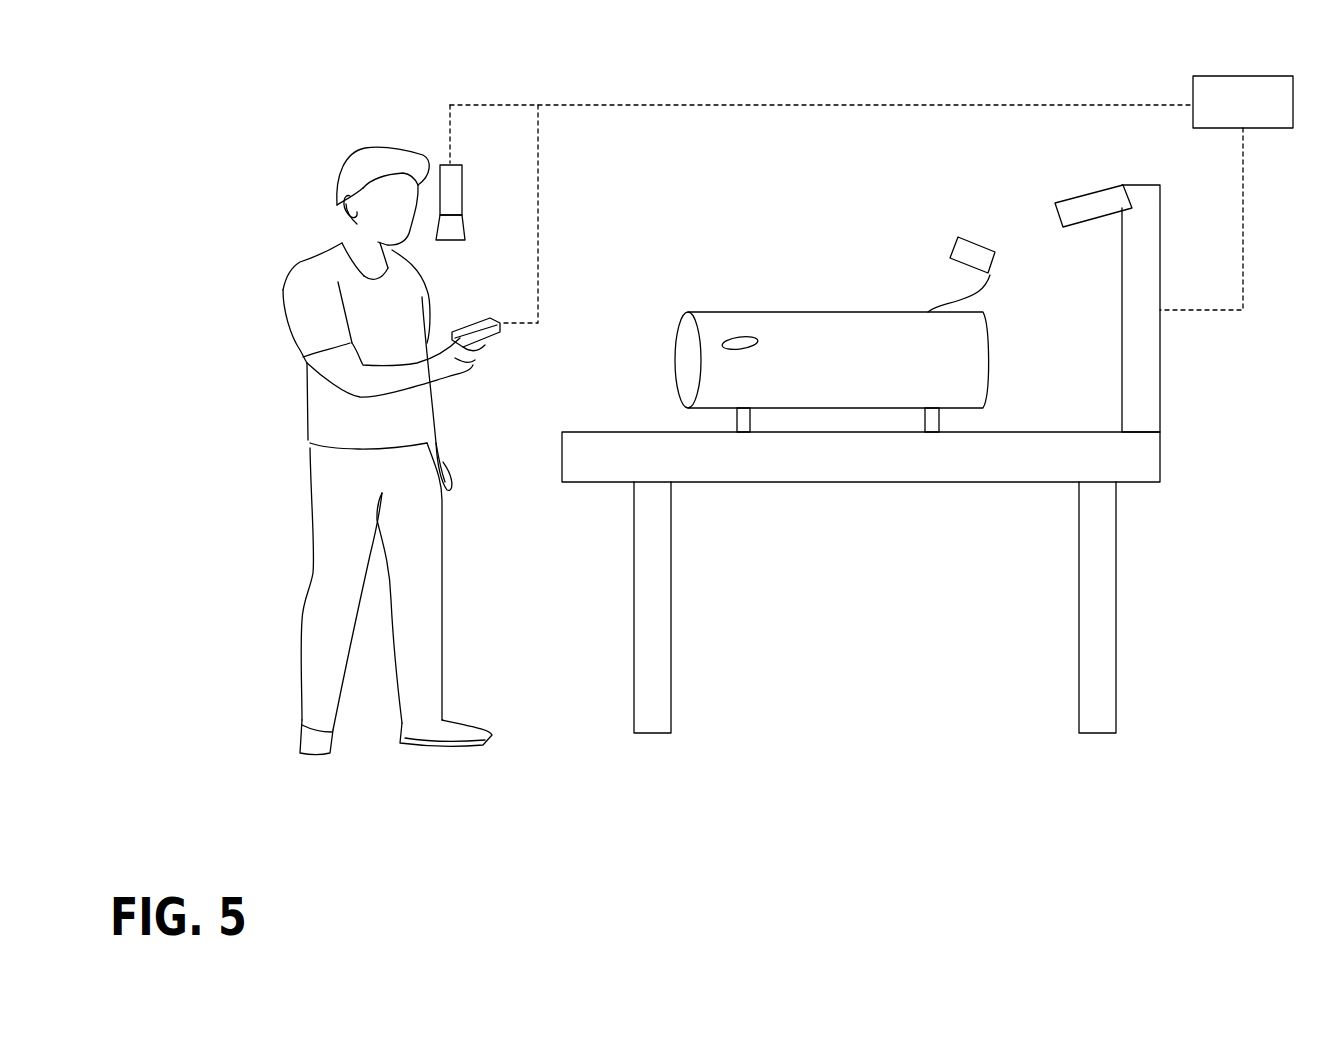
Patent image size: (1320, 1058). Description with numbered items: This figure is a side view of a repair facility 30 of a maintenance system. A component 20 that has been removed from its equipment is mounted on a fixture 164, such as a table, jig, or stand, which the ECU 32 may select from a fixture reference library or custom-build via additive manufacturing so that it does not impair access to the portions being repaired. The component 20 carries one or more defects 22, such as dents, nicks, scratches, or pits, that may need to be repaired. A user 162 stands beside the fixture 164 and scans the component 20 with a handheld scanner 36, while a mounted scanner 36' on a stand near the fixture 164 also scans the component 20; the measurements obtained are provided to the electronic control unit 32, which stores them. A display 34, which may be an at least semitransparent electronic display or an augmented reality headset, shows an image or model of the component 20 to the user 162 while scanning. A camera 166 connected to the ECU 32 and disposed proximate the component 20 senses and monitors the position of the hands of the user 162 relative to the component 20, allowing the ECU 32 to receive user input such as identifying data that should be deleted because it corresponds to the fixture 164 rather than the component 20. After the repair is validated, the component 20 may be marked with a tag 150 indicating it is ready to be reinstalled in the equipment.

The component 20 is at (793, 310).
The defect 22 is at (738, 335).
The repair facility 30 is at (205, 663).
The electronic control unit 32 is at (1227, 75).
The display 34 is at (463, 188).
The handheld scanner 36 is at (495, 369).
The mounted scanner 36' is at (1136, 308).
The tag 150 is at (973, 238).
The user 162 is at (275, 355).
The fixture 164 is at (770, 547).
The camera 166 is at (465, 226).